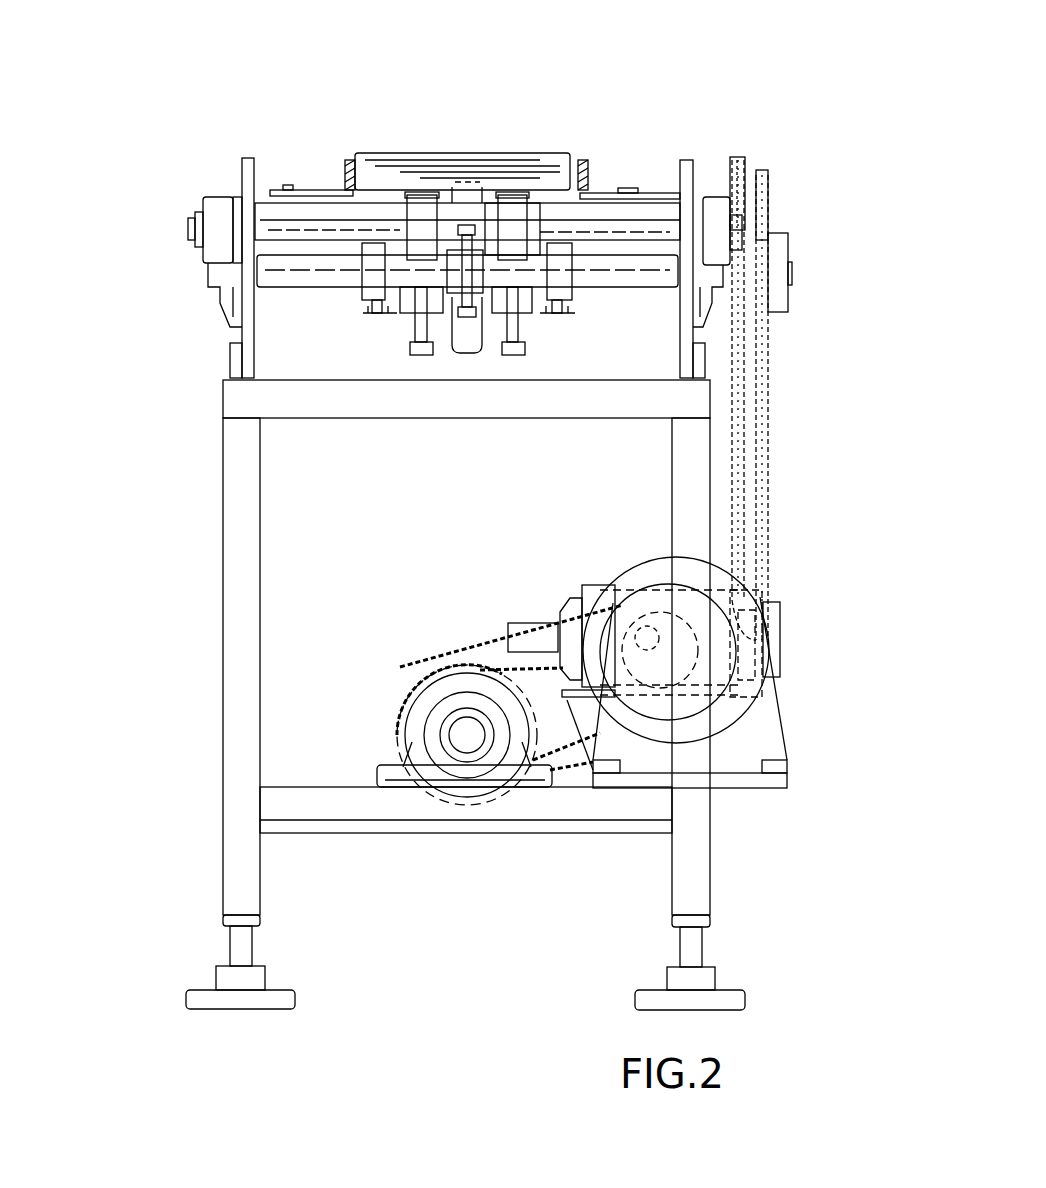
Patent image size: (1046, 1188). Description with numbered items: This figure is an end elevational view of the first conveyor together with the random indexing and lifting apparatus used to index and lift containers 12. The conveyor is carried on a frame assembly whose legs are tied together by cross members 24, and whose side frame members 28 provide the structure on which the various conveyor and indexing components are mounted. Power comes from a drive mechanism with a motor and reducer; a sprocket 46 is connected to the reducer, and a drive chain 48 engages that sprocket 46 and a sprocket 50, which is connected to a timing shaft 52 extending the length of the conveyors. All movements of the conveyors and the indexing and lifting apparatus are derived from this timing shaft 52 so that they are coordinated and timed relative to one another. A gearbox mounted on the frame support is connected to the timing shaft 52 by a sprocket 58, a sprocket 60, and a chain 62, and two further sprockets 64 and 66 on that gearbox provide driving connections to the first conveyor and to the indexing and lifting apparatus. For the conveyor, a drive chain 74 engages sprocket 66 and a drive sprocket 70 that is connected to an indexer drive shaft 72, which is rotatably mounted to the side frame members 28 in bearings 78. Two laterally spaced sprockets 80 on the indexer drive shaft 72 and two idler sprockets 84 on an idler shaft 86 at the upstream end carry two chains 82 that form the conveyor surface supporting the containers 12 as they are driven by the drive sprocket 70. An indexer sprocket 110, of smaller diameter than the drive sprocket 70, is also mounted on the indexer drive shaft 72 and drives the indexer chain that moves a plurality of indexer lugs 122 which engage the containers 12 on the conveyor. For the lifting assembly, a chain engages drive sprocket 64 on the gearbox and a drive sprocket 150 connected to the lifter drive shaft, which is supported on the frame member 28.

The containers 12 is at (513, 153).
The cross members 24 is at (585, 808).
The side frame members 28 is at (242, 166).
The sprocket 46 is at (733, 705).
The drive chain 48 is at (640, 743).
The sprocket 50 is at (463, 802).
The timing shaft 52 is at (467, 735).
The sprocket 58 is at (413, 707).
The sprocket 60 is at (625, 605).
The chain 62 is at (488, 650).
The drive sprocket 64 is at (738, 593).
The sprocket 66 is at (780, 602).
The drive sprocket 70 is at (768, 198).
The indexer drive shaft 72 is at (612, 268).
The drive chain 74 is at (772, 408).
The bearings 78 is at (220, 302).
The sprockets 80 is at (413, 328).
The chains 82 is at (503, 193).
The idler sprockets 84 is at (420, 222).
The idler shaft 86 is at (340, 230).
The indexer sprocket 110 is at (455, 298).
The indexer lugs 122 is at (468, 343).
The drive sprocket 150 is at (740, 162).